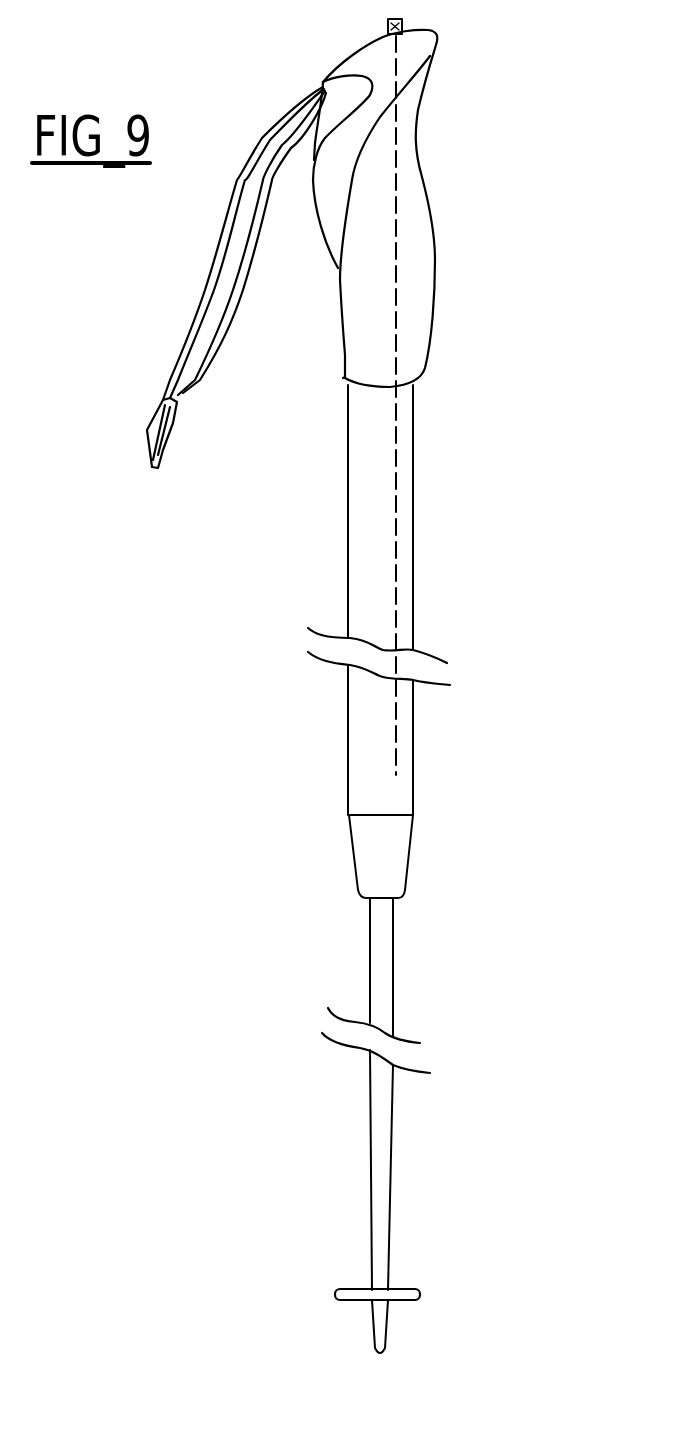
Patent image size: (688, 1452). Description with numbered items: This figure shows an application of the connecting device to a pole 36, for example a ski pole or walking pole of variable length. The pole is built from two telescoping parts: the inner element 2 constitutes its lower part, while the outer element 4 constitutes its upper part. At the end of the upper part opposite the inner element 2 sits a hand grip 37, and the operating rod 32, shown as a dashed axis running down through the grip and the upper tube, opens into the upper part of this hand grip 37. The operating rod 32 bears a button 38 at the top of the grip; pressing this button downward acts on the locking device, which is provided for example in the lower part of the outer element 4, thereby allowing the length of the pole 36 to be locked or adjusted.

The inner element 2 is at (385, 960).
The outer element 4 is at (360, 752).
The operating rod 32 is at (397, 553).
The pole 36 is at (427, 468).
The hand grip 37 is at (422, 272).
The button 38 is at (387, 23).